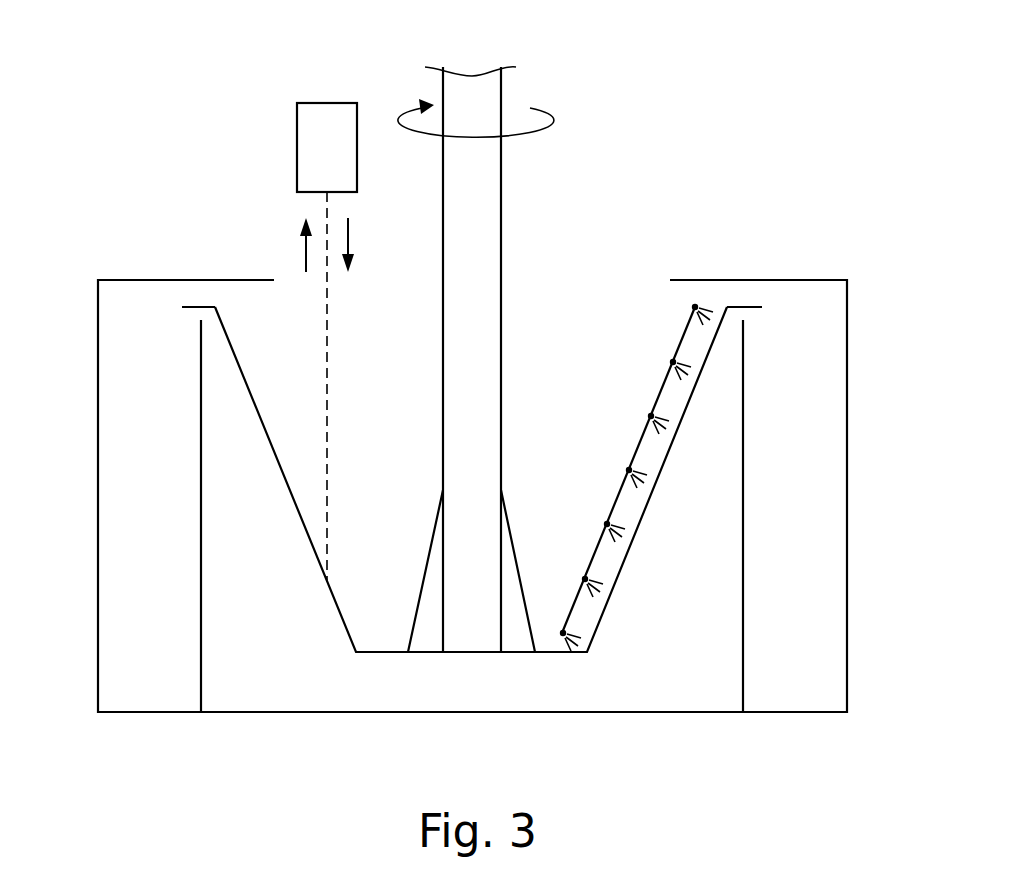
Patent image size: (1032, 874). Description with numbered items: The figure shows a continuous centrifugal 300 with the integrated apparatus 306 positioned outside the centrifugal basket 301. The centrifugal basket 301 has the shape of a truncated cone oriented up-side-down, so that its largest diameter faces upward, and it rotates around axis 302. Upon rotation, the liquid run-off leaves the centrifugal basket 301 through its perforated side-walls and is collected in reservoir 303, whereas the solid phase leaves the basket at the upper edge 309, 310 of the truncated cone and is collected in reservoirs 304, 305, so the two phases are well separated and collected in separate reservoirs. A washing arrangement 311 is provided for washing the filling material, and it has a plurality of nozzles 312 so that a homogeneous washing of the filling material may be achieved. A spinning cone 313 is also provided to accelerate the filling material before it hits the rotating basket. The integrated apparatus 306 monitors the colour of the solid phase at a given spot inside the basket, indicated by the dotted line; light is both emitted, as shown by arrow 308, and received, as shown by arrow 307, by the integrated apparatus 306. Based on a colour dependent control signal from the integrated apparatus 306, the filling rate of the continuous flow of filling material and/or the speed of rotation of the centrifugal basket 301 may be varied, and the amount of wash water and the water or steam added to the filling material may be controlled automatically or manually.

The continuous centrifugal 300 is at (680, 186).
The centrifugal basket 301 is at (652, 502).
The axis 302 is at (472, 380).
The reservoir 303 is at (680, 680).
The reservoir 304 is at (805, 500).
The reservoir 305 is at (148, 455).
The integrated apparatus 306 is at (328, 118).
The arrow 307 is at (304, 238).
The arrow 308 is at (352, 237).
The upper edge 309 is at (740, 300).
The upper edge 310 is at (197, 300).
The washing arrangement 311 is at (605, 522).
The nozzles 312 is at (612, 535).
The spinning cone 313 is at (432, 530).